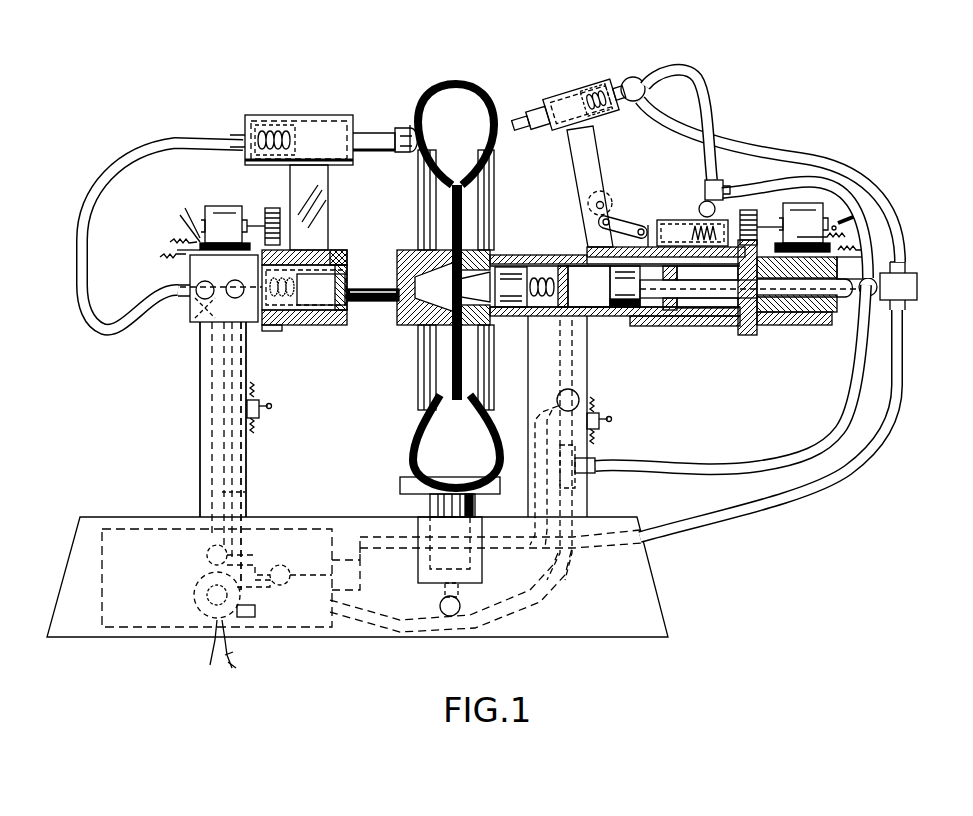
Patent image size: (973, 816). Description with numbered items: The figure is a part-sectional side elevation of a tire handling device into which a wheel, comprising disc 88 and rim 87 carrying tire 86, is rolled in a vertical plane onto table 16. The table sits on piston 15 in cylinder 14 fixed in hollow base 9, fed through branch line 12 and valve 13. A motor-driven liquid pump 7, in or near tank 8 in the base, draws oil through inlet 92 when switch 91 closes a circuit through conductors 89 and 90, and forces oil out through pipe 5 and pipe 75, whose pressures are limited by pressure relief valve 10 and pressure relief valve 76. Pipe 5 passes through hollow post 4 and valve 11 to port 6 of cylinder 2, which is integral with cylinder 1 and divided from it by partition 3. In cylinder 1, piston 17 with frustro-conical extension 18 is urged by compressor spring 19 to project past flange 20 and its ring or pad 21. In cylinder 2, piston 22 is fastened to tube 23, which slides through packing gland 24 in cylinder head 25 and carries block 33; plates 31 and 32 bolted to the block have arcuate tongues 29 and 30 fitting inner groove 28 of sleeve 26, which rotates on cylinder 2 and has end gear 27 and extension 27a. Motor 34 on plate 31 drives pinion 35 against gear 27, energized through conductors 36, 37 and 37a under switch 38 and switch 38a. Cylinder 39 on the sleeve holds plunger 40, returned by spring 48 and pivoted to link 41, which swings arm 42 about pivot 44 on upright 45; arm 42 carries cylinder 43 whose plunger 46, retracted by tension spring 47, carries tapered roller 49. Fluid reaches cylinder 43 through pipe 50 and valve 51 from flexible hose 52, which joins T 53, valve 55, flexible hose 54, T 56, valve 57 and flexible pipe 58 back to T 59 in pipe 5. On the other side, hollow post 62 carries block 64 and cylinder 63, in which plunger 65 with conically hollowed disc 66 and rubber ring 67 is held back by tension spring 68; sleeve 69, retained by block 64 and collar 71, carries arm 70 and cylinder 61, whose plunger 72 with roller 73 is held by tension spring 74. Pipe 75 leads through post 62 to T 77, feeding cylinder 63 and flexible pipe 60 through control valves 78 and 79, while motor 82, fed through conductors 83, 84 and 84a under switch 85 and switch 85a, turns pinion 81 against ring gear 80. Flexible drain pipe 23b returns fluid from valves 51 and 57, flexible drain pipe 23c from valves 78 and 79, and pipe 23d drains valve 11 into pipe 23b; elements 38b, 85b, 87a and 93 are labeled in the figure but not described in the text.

The cylinder 1 is at (553, 258).
The cylinder 2 is at (590, 322).
The partition or bulkhead 3 is at (604, 286).
The hollow post 4 is at (590, 450).
The pipe 5 is at (305, 570).
The port 6 is at (560, 316).
The motor-driven liquid pump 7 is at (195, 600).
The tank 8 is at (165, 528).
The hollow base 9 is at (668, 592).
The pressure relief valve 10 is at (280, 565).
The valve 11 is at (557, 398).
The branch line 12 is at (458, 592).
The valve 13 is at (455, 615).
The cylinder 14 is at (482, 535).
The piston or plunger 15 is at (430, 503).
The table 16 is at (405, 480).
The piston 17 is at (511, 287).
The frustro-conical outer extension 18 is at (453, 287).
The compressor spring 19 is at (520, 318).
The flange 20 is at (505, 256).
The ring or pad 21 is at (488, 250).
The piston 22 is at (600, 318).
The tube 23 is at (695, 320).
The flexible drain pipe 23b is at (765, 152).
The flexible drain pipe 23c is at (245, 453).
The pipe 23d is at (543, 477).
The packing gland 24 is at (690, 300).
The cylinder head 25 is at (668, 318).
The sleeve 26 is at (732, 332).
The end gear 27 is at (746, 340).
The extension 27a is at (600, 246).
The inner groove 28 is at (762, 330).
The arcuate tongue or projection 29 is at (748, 297).
The arcuate tongue or projection 30 is at (748, 265).
The plate 31 is at (851, 268).
The plate 32 is at (800, 314).
The block 33 is at (832, 296).
The motor 34 is at (800, 203).
The pinion 35 is at (750, 210).
The conductor 36 is at (848, 237).
The conductor 37 is at (860, 250).
The conductor 37a is at (840, 222).
The switch 38 is at (858, 252).
The switch 38a is at (835, 226).
The switch 38b is at (598, 422).
The cylinder 39 is at (672, 222).
The piston or plunger 40 is at (650, 225).
The link 41 is at (622, 222).
The arm 42 is at (600, 142).
The cylinder 43 is at (550, 98).
The pivot 44 is at (602, 201).
The upright 45 is at (584, 208).
The piston or plunger 46 is at (535, 110).
The tension spring 47 is at (592, 82).
The spring 48 is at (692, 206).
The tapered end 49 is at (505, 136).
The pipe 50 is at (617, 82).
The valve 51 is at (641, 78).
The flexible hose or pipe 52 is at (707, 78).
The T 53 is at (722, 182).
The flexible hose 54 is at (905, 228).
The valve 55 is at (716, 209).
The T 56 is at (917, 288).
The valve 57 is at (866, 300).
The flexible pipe 58 is at (873, 448).
The T 59 is at (578, 480).
The flexible pipe 60 is at (97, 212).
The cylinder 61 is at (320, 115).
The hollow post 62 is at (250, 442).
The cylinder 63 is at (328, 305).
The block 64 is at (248, 322).
The plunger 65 is at (380, 328).
The conically hollowed disc 66 is at (403, 250).
The rubber ring 67 is at (445, 330).
The tension spring 68 is at (290, 270).
The sleeve 69 is at (322, 262).
The arm 70 is at (325, 190).
The collar 71 is at (345, 262).
The plunger 72 is at (370, 125).
The roller 73 is at (410, 125).
The tension spring 74 is at (268, 122).
The pipe 75 is at (246, 490).
The pressure relief valve 76 is at (207, 556).
The T 77 is at (186, 315).
The control valve 78 is at (238, 279).
The control valve 79 is at (207, 280).
The ring gear 80 is at (285, 330).
The pinion 81 is at (274, 215).
The motor 82 is at (232, 210).
The conductor 83 is at (170, 242).
The conductor 84 is at (160, 257).
The conductor 84a is at (180, 215).
The switch 85 is at (177, 250).
The switch 85a is at (185, 208).
The switch 85b is at (262, 400).
The tire 86 is at (460, 84).
The rim 87 is at (478, 182).
The guide columns 87a is at (438, 178).
The disc 88 is at (436, 392).
The conductor 89 is at (210, 658).
The conductor 90 is at (236, 668).
The switch 91 is at (240, 656).
The inlet 92 is at (258, 612).
The shaft 93 is at (390, 335).